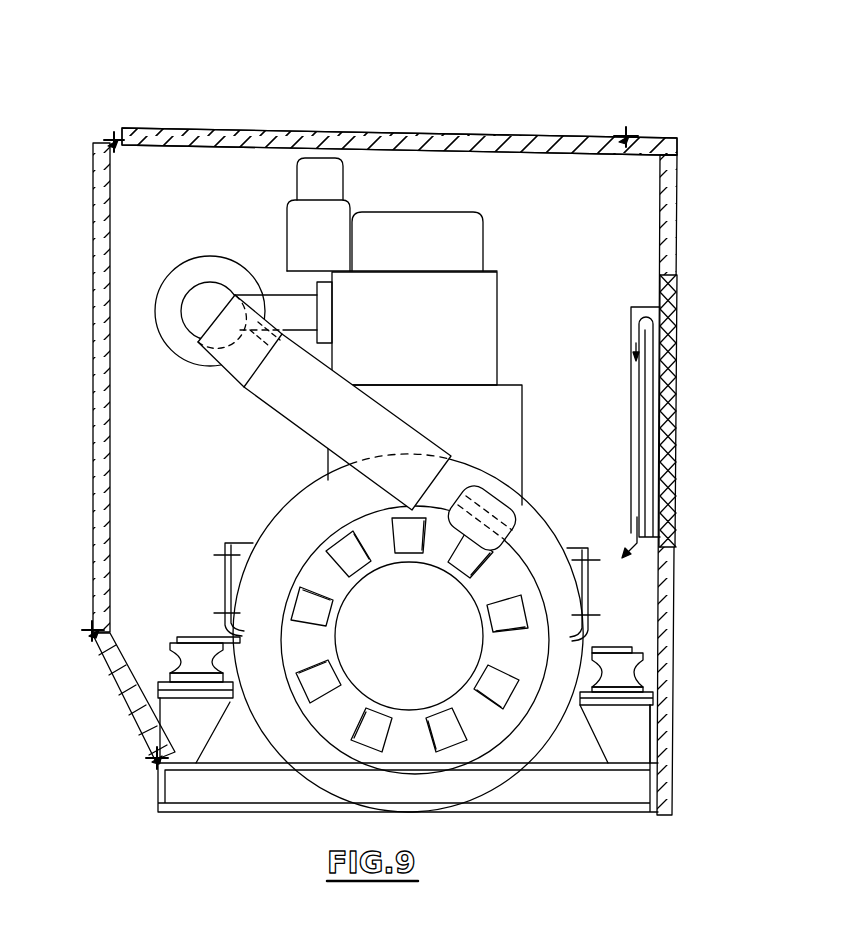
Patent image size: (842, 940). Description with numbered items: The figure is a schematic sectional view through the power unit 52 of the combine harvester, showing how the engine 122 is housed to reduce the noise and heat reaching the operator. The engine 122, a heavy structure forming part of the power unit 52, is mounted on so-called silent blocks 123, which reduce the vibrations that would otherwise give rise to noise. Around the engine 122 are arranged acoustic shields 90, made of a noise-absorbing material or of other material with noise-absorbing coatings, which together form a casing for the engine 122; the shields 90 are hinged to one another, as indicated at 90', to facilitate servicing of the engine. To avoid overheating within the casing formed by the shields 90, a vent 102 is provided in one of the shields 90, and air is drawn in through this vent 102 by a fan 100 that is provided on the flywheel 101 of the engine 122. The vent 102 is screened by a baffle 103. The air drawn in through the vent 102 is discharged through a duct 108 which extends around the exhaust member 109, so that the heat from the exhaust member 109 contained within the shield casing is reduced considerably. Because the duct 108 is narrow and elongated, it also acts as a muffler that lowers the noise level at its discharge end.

The power unit 52 is at (522, 121).
The acoustic shields 90 is at (388, 451).
The hinge 90' is at (365, 438).
The fan 100 is at (514, 640).
The flywheel 101 is at (367, 701).
The vent 102 is at (673, 445).
The baffle 103 is at (631, 373).
The duct 108 is at (243, 392).
The exhaust member 109 is at (222, 368).
The engine 122 is at (498, 317).
The silent blocks 123 is at (170, 660).